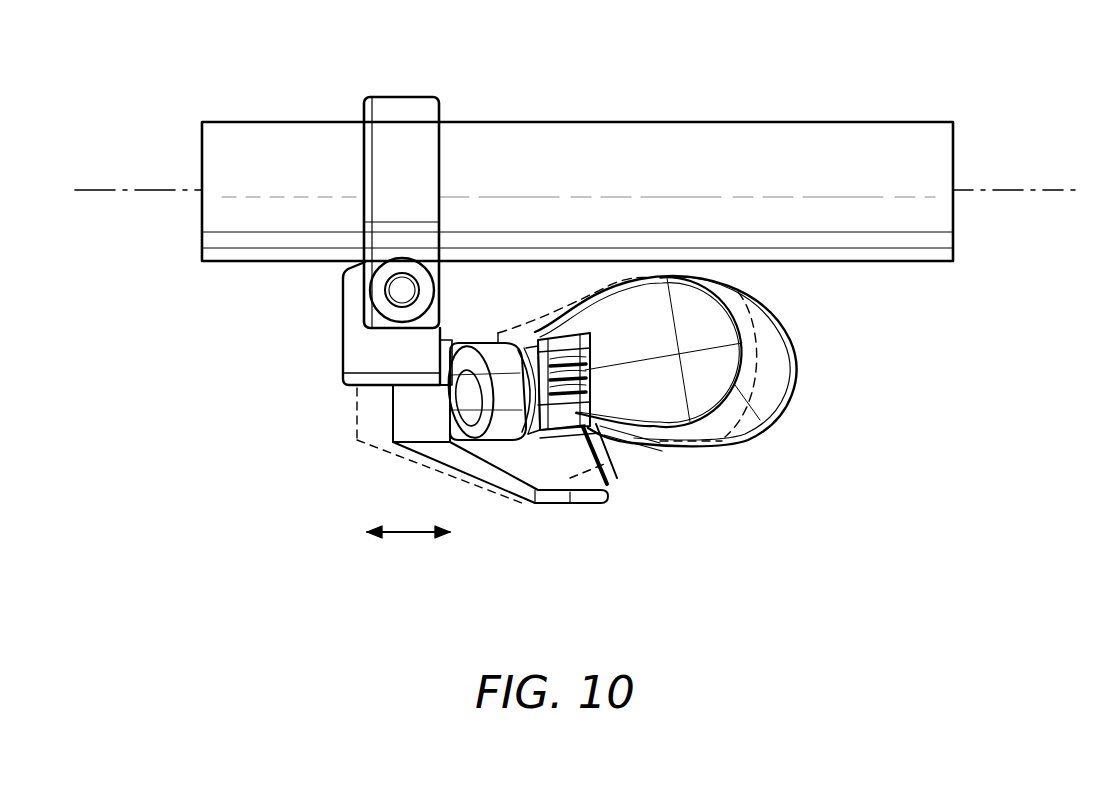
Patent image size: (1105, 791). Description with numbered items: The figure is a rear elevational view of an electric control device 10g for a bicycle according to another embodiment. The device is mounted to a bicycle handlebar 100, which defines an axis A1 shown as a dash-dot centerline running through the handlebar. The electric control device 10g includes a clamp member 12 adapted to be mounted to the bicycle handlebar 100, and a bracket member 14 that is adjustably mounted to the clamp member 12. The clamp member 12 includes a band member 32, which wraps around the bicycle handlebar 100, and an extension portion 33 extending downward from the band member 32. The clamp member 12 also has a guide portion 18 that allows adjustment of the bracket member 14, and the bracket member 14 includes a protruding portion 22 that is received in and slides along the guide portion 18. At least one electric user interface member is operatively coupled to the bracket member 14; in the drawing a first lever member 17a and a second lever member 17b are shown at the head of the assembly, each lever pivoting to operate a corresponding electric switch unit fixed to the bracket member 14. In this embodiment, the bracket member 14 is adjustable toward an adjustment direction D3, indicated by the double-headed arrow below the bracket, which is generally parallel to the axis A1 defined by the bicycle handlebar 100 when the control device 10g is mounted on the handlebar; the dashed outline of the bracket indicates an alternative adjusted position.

The bicycle handlebar 100 is at (642, 140).
The axis A1 is at (1015, 189).
The band member 32 is at (403, 112).
The clamp member 12 is at (363, 335).
The extension portion 33 is at (352, 367).
The bracket member 14 is at (422, 447).
The protruding portion 22 is at (444, 350).
The guide portion 18 is at (489, 323).
The first lever member 17a is at (700, 318).
The second lever member 17b is at (773, 372).
The electric control device 10g is at (292, 451).
The adjustment direction D3 is at (408, 532).